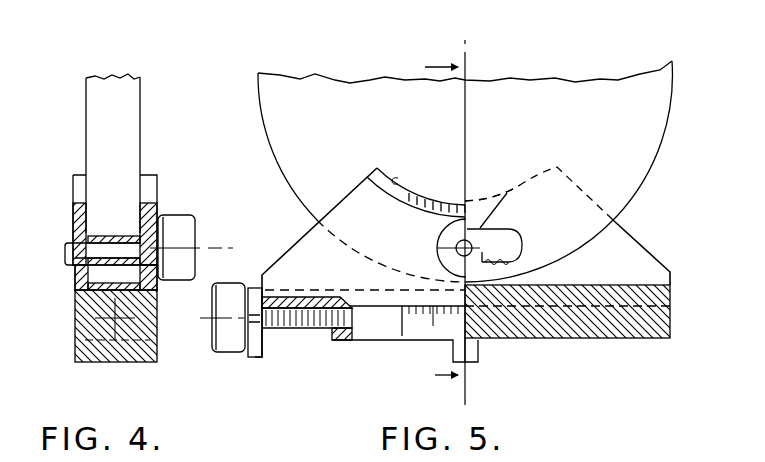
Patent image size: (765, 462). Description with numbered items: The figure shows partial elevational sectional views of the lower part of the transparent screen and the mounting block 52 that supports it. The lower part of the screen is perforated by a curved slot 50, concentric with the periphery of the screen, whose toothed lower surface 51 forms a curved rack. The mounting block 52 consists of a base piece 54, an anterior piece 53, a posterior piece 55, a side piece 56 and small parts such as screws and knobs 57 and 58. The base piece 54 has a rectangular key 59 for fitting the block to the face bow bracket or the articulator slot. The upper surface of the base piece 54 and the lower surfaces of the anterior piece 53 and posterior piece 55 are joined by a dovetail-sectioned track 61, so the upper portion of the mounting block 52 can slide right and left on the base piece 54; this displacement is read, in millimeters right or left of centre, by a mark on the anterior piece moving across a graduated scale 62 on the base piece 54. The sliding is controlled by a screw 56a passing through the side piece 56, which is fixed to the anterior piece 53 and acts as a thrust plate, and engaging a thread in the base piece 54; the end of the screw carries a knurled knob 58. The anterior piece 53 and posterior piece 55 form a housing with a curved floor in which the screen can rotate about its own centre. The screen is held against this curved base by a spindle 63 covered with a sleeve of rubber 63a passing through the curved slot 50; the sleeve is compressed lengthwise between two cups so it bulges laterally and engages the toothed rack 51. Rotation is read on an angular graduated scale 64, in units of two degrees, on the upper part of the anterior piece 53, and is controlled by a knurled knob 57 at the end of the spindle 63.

In FIG. 5, the curved slot 50 is at (518, 240).
In FIG. 4, the toothed lower surface 51 is at (72, 268).
In FIG. 5, the toothed lower surface 51 is at (527, 273).
In FIG. 4, the mounting block 52 is at (140, 173).
In FIG. 5, the mounting block 52 is at (298, 242).
In FIG. 4, the anterior piece 53 is at (157, 195).
In FIG. 4, the base piece 54 is at (115, 352).
In FIG. 5, the base piece 54 is at (383, 334).
In FIG. 4, the posterior piece 55 is at (82, 175).
In FIG. 5, the side piece 56 is at (262, 357).
In FIG. 5, the screw 56a is at (310, 328).
In FIG. 4, the knurled knob 57 is at (180, 228).
In FIG. 4, the knurled knob 58 is at (228, 352).
In FIG. 5, the rectangular key 59 is at (452, 351).
In FIG. 4, the dovetail-sectioned track 61 is at (82, 302).
In FIG. 5, the graduated scale 62 is at (478, 350).
In FIG. 4, the spindle 63 is at (82, 238).
In FIG. 4, the sleeve of rubber 63a is at (118, 238).
In FIG. 5, the sleeve of rubber 63a is at (508, 192).
In FIG. 5, the angular graduated scale 64 is at (422, 197).